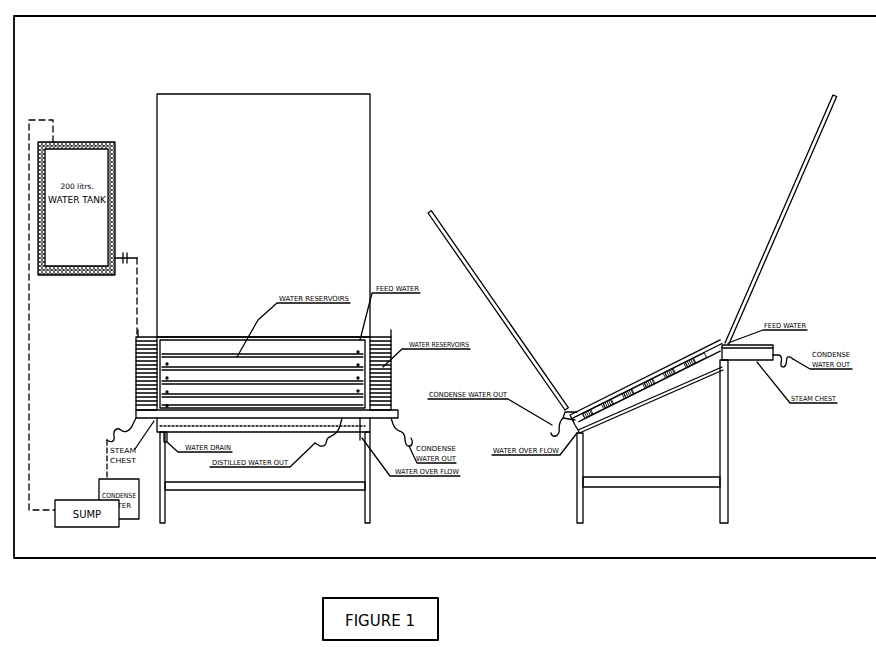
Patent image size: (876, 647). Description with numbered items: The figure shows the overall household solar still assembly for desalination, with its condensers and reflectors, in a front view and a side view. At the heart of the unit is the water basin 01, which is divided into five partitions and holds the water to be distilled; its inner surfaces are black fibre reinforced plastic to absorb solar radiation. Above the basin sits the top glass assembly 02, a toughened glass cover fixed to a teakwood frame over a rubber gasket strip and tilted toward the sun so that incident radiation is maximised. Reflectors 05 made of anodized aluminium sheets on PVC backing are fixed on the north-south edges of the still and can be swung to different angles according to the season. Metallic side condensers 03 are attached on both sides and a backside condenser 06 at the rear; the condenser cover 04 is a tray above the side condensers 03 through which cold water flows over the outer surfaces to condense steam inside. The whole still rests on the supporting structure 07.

The water basin 01 is at (263, 368).
The top glass assembly 02 is at (178, 340).
The side condensers 03 is at (157, 320).
The condenser cover 04 is at (411, 307).
The reflectors 05 is at (500, 310).
The backside condenser 06 is at (370, 148).
The supporting structure 07 is at (370, 490).